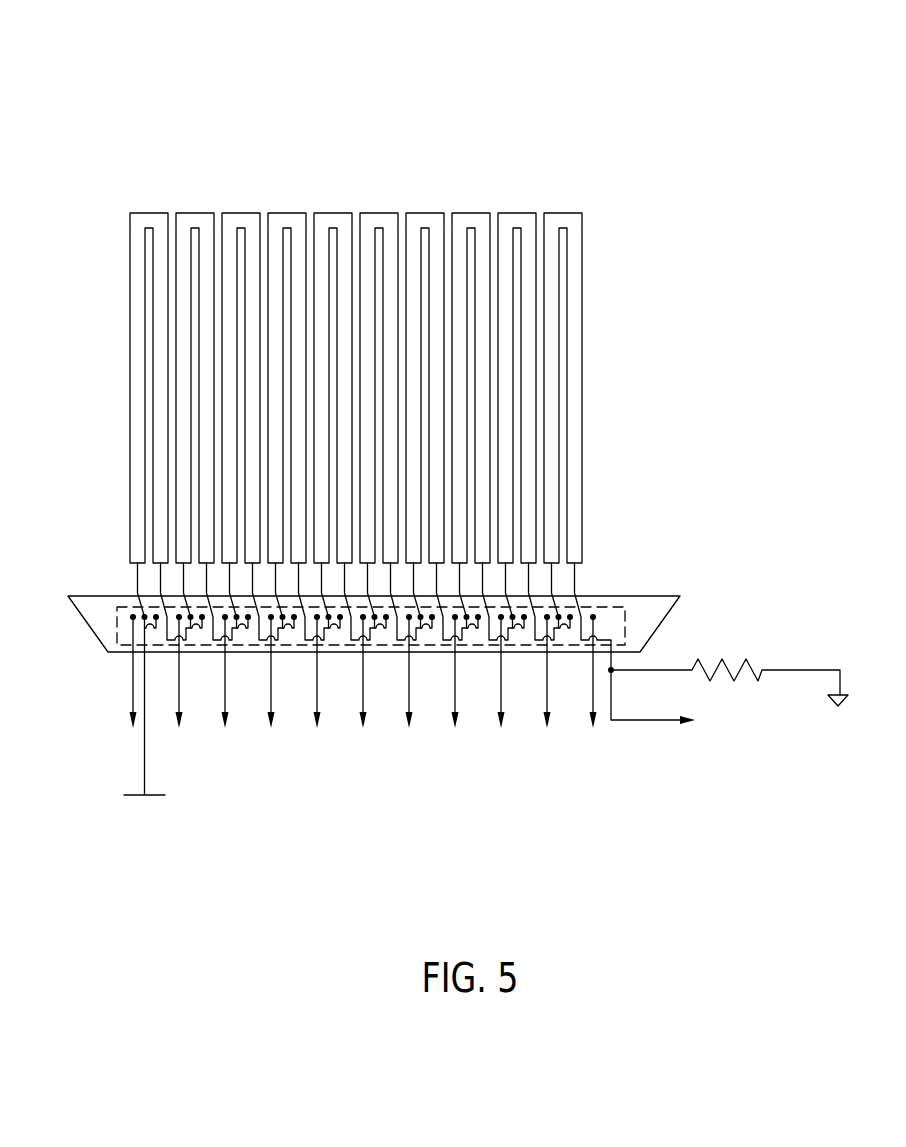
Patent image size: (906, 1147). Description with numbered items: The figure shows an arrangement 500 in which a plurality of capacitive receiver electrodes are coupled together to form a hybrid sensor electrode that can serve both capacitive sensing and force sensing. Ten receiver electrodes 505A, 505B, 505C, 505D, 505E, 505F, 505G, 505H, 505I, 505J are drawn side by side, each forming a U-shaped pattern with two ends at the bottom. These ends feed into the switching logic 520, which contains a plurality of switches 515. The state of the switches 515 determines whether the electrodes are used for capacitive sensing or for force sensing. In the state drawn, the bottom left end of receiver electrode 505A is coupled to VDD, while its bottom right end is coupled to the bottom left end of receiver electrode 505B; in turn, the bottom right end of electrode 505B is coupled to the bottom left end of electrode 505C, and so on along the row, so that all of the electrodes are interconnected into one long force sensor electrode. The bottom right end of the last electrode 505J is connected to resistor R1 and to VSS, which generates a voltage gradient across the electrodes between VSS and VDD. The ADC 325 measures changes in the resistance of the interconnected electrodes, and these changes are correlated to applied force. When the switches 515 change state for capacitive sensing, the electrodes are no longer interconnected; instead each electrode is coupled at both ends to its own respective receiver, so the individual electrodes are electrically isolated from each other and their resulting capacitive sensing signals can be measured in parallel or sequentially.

The arrangement 500 is at (100, 87).
The receiver electrode 505A is at (150, 212).
The receiver electrode 505B is at (190, 212).
The receiver electrode 505C is at (240, 212).
The receiver electrode 505D is at (285, 212).
The receiver electrode 505E is at (330, 212).
The receiver electrode 505F is at (375, 212).
The receiver electrode 505G is at (425, 212).
The receiver electrode 505H is at (468, 212).
The receiver electrode 505I is at (508, 212).
The receiver electrode 505J is at (548, 212).
The switches 515 is at (118, 610).
The switching logic 520 is at (642, 597).
The resistor R1 is at (729, 669).
The ADC 325 is at (750, 721).